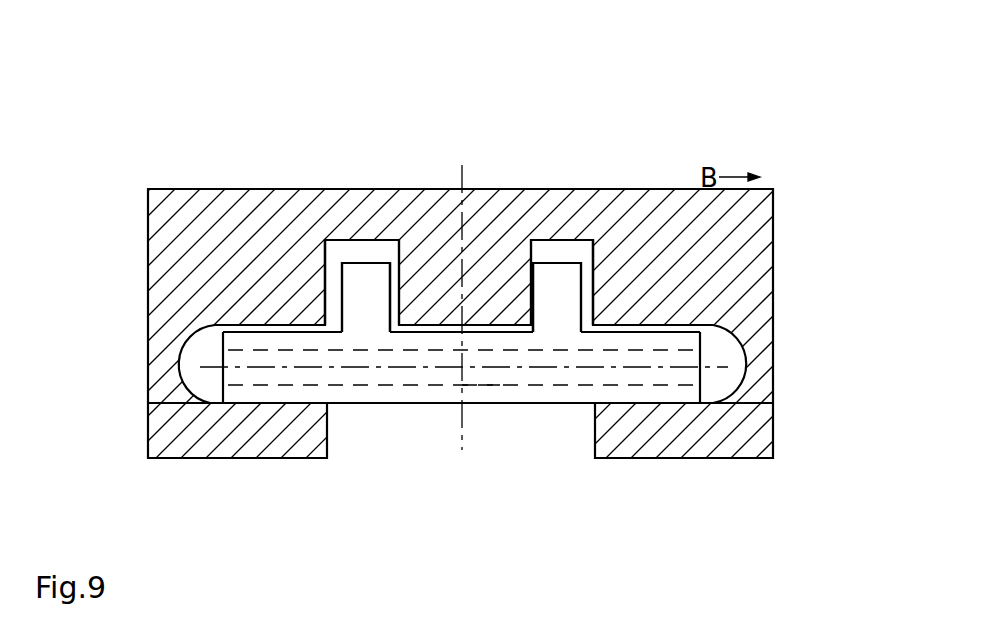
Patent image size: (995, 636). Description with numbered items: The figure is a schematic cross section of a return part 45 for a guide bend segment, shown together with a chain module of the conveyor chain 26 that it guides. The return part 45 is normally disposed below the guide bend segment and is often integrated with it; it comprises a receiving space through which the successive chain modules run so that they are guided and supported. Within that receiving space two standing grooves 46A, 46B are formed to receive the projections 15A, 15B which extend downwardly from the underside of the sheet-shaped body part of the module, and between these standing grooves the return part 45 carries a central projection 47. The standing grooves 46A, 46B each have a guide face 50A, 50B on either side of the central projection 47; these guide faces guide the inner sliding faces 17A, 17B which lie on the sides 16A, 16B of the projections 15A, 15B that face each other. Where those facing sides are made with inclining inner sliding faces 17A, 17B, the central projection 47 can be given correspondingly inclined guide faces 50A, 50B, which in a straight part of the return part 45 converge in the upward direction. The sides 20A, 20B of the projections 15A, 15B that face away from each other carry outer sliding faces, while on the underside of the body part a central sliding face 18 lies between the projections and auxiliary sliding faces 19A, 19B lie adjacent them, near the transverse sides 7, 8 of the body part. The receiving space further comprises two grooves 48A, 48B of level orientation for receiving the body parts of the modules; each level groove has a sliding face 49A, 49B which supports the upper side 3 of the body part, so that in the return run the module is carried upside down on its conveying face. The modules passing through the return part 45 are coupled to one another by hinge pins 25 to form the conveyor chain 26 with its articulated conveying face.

The return part 45 is at (107, 132).
The projection 15A is at (596, 237).
The projection 15B is at (320, 238).
The side facing the other projection 16A is at (566, 197).
The side facing the other projection 16B is at (342, 197).
The inner sliding face 17A is at (562, 252).
The inner sliding face 17B is at (372, 283).
The central sliding face 18 is at (450, 331).
The central projection 47 is at (468, 277).
The standing groove 46A is at (568, 296).
The standing groove 46B is at (350, 253).
The guide face 50A is at (535, 272).
The guide face 50B is at (389, 283).
The side facing away 20A is at (583, 303).
The side facing away 20B is at (337, 308).
The auxiliary sliding face 19A is at (663, 322).
The auxiliary sliding face 19B is at (260, 330).
The side of the body part 8 is at (220, 352).
The side of the body part 7 is at (702, 358).
The level groove 48A is at (717, 383).
The level groove 48B is at (198, 383).
The sliding face 49A is at (710, 403).
The sliding face 49B is at (218, 404).
The upper side 3 is at (548, 404).
The hinge pin 25 is at (482, 378).
The conveyor chain 26 is at (418, 405).